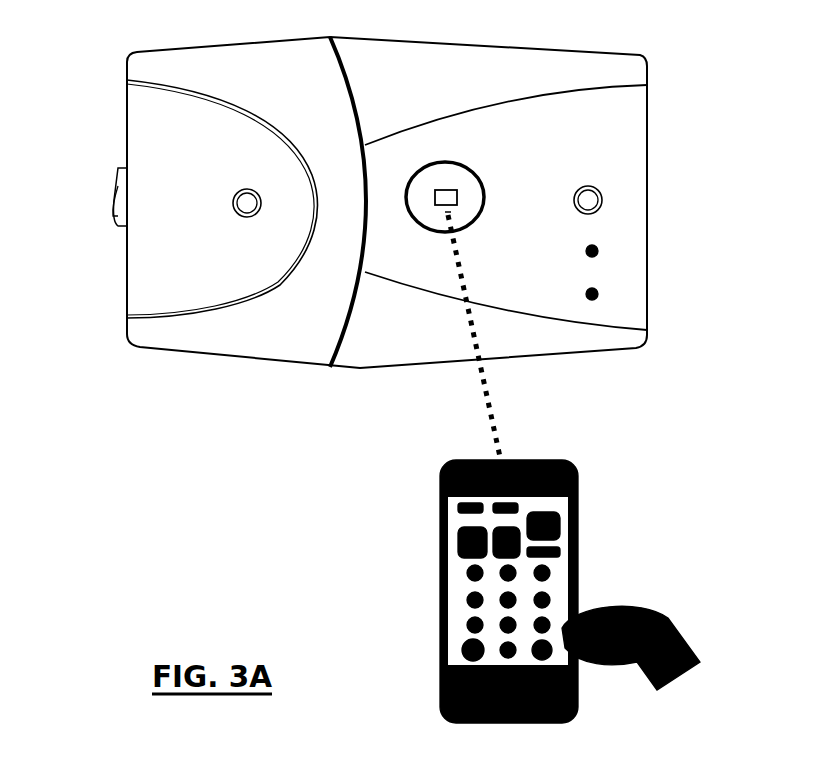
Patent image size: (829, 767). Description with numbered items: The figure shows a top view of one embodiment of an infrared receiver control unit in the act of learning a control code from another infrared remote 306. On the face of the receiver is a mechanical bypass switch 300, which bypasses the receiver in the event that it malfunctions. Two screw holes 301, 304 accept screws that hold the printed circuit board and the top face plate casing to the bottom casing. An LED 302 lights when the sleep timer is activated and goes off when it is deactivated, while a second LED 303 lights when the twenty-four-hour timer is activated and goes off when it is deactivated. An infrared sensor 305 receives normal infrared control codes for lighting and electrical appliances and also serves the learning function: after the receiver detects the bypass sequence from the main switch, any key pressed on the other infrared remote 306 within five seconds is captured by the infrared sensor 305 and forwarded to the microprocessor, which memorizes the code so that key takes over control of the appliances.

The mechanical bypass switch 300 is at (114, 203).
The screw hole 301 is at (239, 217).
The LED 302 is at (604, 293).
The LED 303 is at (604, 251).
The screw hole 304 is at (603, 200).
The infrared sensor 305 is at (462, 193).
The infrared remote 306 is at (440, 543).